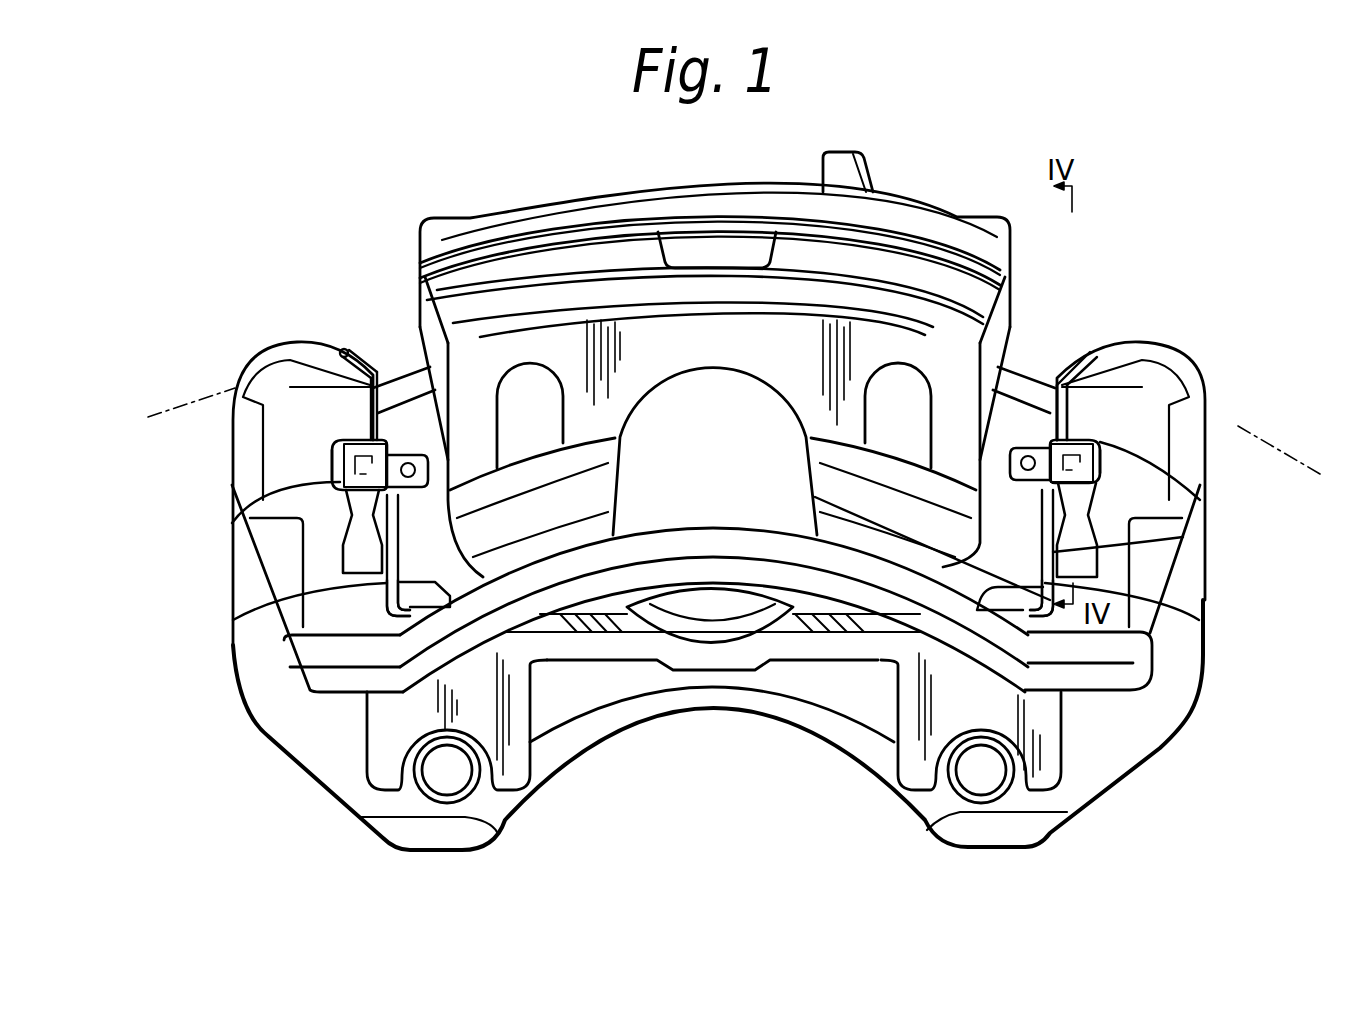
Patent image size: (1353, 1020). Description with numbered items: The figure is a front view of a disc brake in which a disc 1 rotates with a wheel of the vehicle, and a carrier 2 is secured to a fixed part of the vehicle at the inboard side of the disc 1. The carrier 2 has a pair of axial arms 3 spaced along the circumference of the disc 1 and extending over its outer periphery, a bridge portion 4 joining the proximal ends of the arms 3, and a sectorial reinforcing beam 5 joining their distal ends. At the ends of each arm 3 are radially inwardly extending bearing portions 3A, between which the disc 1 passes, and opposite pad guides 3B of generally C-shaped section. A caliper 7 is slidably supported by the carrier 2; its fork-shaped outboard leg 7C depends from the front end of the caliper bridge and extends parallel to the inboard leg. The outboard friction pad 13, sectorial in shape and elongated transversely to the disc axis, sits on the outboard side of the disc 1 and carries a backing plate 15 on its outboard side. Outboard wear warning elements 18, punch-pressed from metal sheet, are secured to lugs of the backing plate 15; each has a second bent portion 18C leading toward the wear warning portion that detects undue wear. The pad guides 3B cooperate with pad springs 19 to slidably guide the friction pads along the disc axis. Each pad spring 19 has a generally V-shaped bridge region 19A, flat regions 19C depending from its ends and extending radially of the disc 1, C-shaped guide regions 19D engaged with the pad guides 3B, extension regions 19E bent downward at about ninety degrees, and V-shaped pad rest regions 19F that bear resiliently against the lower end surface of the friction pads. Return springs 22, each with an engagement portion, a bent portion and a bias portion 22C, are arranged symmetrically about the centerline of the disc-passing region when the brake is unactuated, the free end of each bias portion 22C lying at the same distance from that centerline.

The disc 1 is at (1240, 424).
The carrier 2 is at (1203, 676).
The axial arm 3 is at (247, 367).
The bearing portion 3A is at (283, 632).
The pad guide 3B is at (337, 494).
The bridge portion 4 is at (747, 692).
The sectorial reinforcing beam 5 is at (671, 565).
The caliper 7 is at (975, 212).
The outboard leg 7C is at (637, 330).
The outboard friction pad 13 is at (1021, 386).
The backing plate 15 is at (975, 567).
The outboard wear warning element 18 is at (250, 518).
The second bent portion 18C is at (345, 440).
The pad spring 19 is at (320, 443).
The bridge region 19A is at (345, 350).
The flat region 19C is at (1099, 422).
The guide region 19D is at (1093, 352).
The extension region 19E is at (1062, 618).
The pad rest region 19F is at (405, 613).
The return spring 22 is at (358, 553).
The bias portion 22C is at (328, 471).